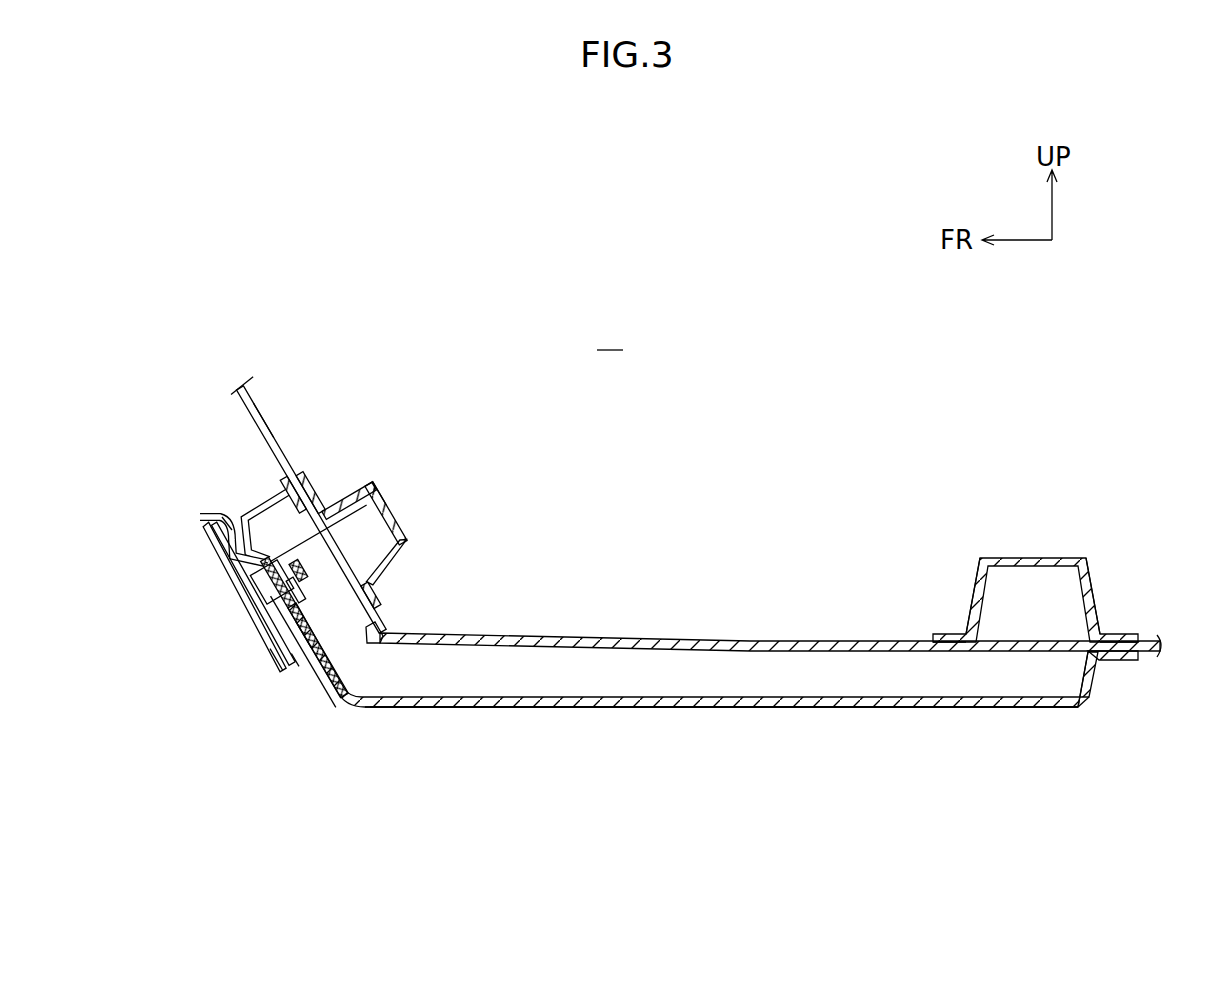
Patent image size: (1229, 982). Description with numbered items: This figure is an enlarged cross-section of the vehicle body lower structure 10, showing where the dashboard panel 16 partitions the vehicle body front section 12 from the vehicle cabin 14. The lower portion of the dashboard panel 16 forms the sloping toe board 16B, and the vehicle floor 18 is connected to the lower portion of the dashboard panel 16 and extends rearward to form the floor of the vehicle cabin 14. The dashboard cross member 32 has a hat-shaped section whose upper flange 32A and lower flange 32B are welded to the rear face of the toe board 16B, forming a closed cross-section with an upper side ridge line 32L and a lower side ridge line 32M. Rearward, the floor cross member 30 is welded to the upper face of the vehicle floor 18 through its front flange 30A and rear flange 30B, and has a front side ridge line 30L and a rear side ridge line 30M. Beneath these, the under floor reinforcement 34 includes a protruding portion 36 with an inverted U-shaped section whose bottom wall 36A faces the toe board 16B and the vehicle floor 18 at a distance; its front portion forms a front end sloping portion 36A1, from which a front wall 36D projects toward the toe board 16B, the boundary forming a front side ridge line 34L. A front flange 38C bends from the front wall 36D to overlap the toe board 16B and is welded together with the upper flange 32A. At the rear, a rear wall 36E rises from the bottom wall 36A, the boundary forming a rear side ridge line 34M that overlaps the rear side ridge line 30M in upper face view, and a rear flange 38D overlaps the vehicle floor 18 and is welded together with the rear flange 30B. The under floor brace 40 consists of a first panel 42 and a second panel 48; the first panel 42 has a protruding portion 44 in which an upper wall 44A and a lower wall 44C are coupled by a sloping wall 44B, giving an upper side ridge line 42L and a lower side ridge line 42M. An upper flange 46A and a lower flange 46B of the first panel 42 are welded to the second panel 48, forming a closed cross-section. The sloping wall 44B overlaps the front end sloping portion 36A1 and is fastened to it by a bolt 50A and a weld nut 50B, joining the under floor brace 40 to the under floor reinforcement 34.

The vehicle body lower structure 10 is at (710, 646).
The vehicle body front section 12 is at (263, 456).
The vehicle cabin 14 is at (612, 336).
The dashboard panel 16 is at (313, 456).
The toe board 16B is at (272, 404).
The vehicle floor 18 is at (692, 631).
The floor cross member 30 is at (1038, 548).
The front flange 30A is at (955, 633).
The rear flange 30B is at (1110, 633).
The front side ridge line 30L is at (980, 558).
The rear side ridge line 30M is at (1088, 560).
The dashboard cross member 32 is at (403, 516).
The upper flange 32A is at (325, 508).
The lower flange 32B is at (385, 590).
The upper side ridge line 32L is at (368, 490).
The lower side ridge line 32M is at (407, 548).
The under floor reinforcement 34 is at (674, 636).
The front side ridge line 34L is at (262, 548).
The rear side ridge line 34M is at (1090, 708).
The protruding portion 36 is at (710, 601).
The bottom wall 36A is at (565, 708).
The front end sloping portion 36A1 is at (378, 494).
The front wall 36D is at (280, 500).
The rear wall 36E is at (1098, 695).
The front flange 38C is at (283, 496).
The rear flange 38D is at (1128, 660).
The under floor brace 40 is at (269, 638).
The first panel 42 is at (289, 609).
The upper side ridge line 42L is at (230, 522).
The lower side ridge line 42M is at (305, 632).
The protruding portion 44 is at (241, 621).
The upper wall 44A is at (213, 527).
The sloping wall 44B is at (298, 583).
The lower wall 44C is at (300, 667).
The upper flange 46A is at (212, 553).
The lower flange 46B is at (279, 663).
The second panel 48 is at (242, 640).
The bolt 50A is at (258, 595).
The weld nut 50B is at (310, 577).